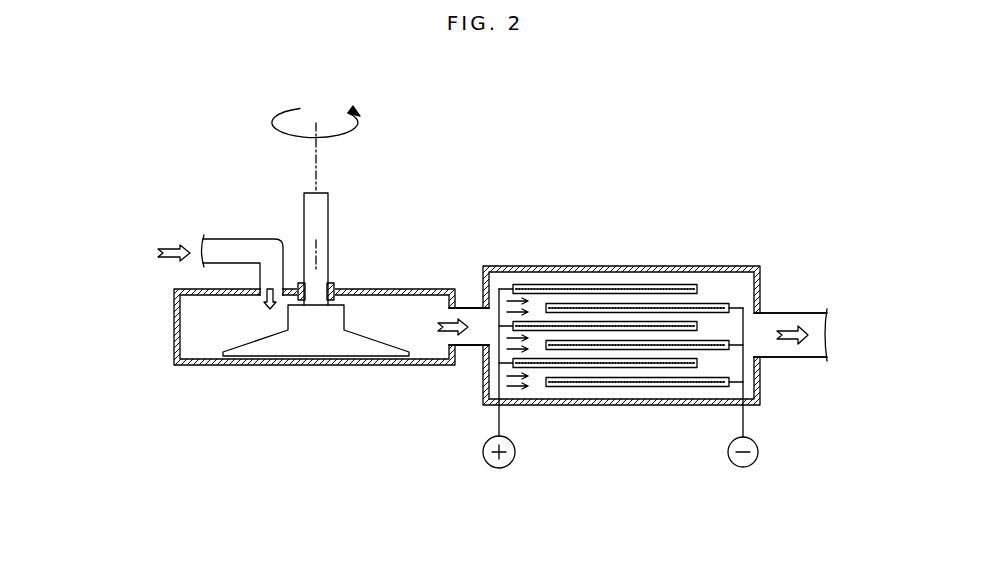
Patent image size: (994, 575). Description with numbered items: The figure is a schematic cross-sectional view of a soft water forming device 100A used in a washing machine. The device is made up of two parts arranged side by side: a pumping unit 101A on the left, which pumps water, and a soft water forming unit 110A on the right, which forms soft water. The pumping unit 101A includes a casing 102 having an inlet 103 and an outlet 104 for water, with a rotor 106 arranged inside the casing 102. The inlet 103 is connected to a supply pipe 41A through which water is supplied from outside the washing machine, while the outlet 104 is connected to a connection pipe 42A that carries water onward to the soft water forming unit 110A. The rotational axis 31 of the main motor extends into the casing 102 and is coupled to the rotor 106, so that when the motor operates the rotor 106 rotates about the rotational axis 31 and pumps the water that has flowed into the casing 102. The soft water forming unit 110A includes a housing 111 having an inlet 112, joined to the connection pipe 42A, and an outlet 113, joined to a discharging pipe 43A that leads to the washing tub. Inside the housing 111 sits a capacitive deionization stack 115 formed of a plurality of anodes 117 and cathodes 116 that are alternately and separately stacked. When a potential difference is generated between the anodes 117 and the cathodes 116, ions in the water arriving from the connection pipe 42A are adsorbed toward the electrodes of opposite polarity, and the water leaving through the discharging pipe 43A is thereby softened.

The soft water forming device 100A is at (170, 164).
The pumping unit 101A is at (330, 376).
The casing 102 is at (176, 345).
The inlet 103 is at (262, 281).
The outlet 104 is at (449, 342).
The rotor 106 is at (255, 353).
The rotational axis 31 is at (328, 233).
The supply pipe 41A is at (235, 240).
The connection pipe 42A is at (470, 340).
The discharging pipe 43A is at (808, 352).
The soft water forming unit 110A is at (664, 418).
The housing 111 is at (680, 268).
The inlet 112 is at (479, 313).
The outlet 113 is at (763, 348).
The capacitive deionization stack 115 is at (719, 285).
The cathodes 116 is at (603, 289).
The anodes 117 is at (722, 303).